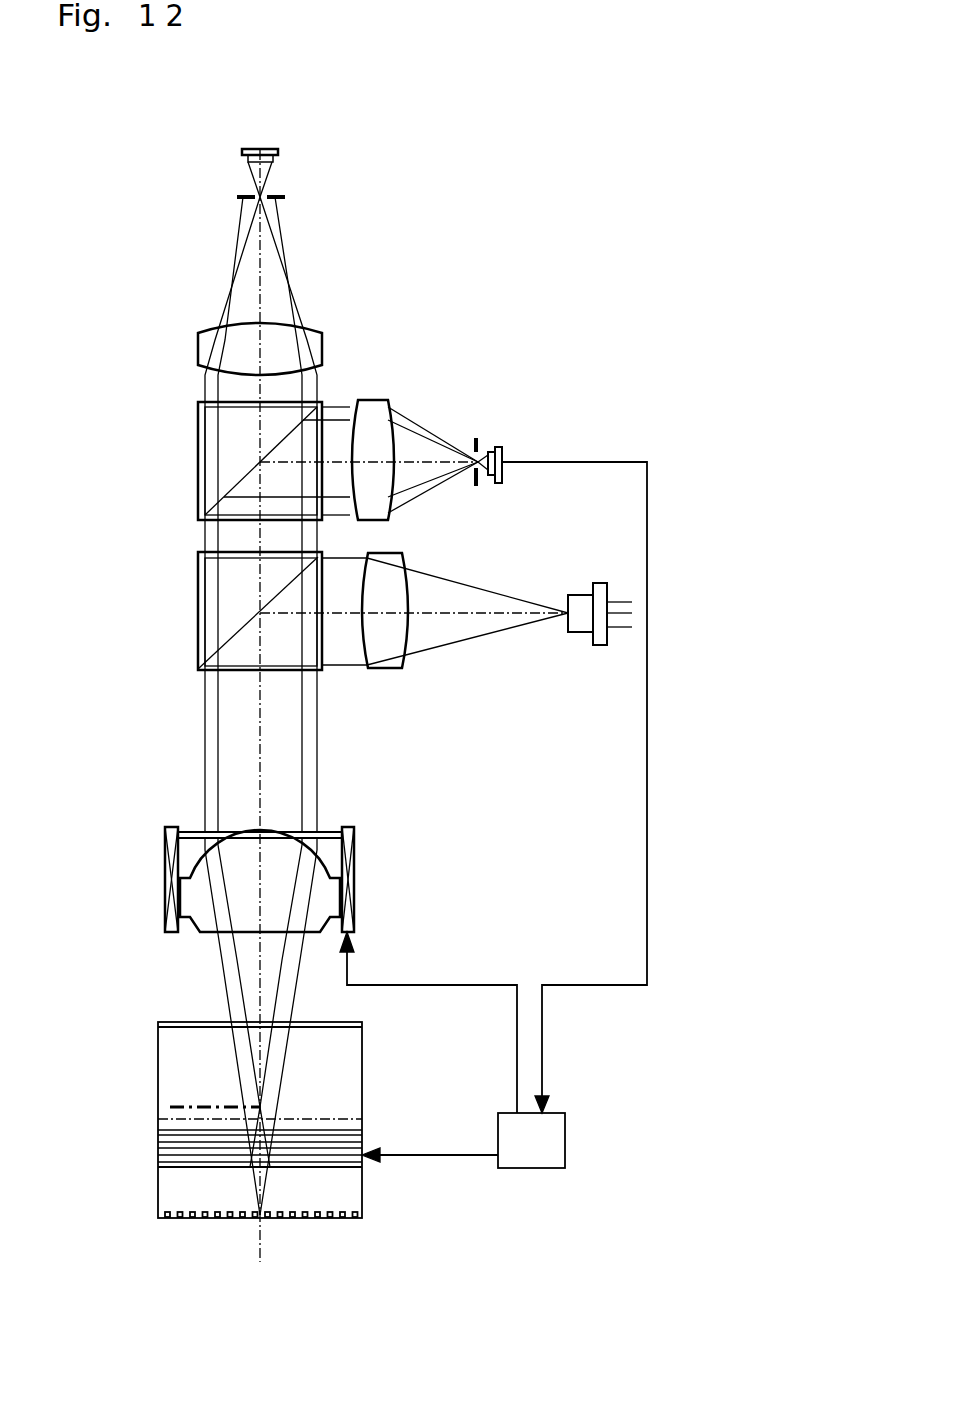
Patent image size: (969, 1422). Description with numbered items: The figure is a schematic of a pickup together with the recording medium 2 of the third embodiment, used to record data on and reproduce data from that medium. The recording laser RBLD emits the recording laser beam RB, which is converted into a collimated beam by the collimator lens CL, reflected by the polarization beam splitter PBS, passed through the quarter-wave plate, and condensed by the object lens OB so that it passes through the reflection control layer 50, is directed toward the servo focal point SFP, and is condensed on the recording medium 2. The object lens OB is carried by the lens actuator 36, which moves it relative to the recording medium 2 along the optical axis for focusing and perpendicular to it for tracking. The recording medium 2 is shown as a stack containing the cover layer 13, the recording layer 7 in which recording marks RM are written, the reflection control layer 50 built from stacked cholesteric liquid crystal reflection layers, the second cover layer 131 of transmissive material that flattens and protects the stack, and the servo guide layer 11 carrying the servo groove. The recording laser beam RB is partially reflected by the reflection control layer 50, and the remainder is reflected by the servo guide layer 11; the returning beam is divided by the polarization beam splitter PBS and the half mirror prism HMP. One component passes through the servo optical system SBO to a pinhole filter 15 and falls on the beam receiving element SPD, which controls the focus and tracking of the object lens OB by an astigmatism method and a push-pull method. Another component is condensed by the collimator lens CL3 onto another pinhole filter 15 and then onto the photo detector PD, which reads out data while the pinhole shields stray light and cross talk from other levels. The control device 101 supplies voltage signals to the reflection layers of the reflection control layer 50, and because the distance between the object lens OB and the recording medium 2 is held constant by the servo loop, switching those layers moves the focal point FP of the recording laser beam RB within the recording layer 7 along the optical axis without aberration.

The photo detector PD is at (278, 152).
The pinhole filter 15 is at (285, 196).
The collimator lens CL3 is at (322, 340).
The half mirror prism HMP is at (197, 448).
The servo optical system SBO is at (390, 406).
The beam receiving element SPD is at (499, 447).
The polarization beam splitter PBS is at (197, 605).
The collimator lens CL is at (398, 552).
The recording laser beam RB is at (463, 585).
The recording laser RBLD is at (595, 645).
The lens actuator 36 is at (172, 877).
The object lens OB is at (186, 902).
The recording medium 2 is at (222, 1096).
The cover layer 13 is at (353, 1025).
The recording layer 7 is at (353, 1082).
The focal point FP is at (260, 1107).
The reflection control layer 50 is at (157, 1148).
The recording marks RM is at (233, 1120).
The second cover layer 131 is at (162, 1187).
The servo guide layer 11 is at (317, 1220).
The servo focal point SFP is at (263, 1217).
The optical axis AX is at (260, 726).
The control device 101 is at (565, 1168).